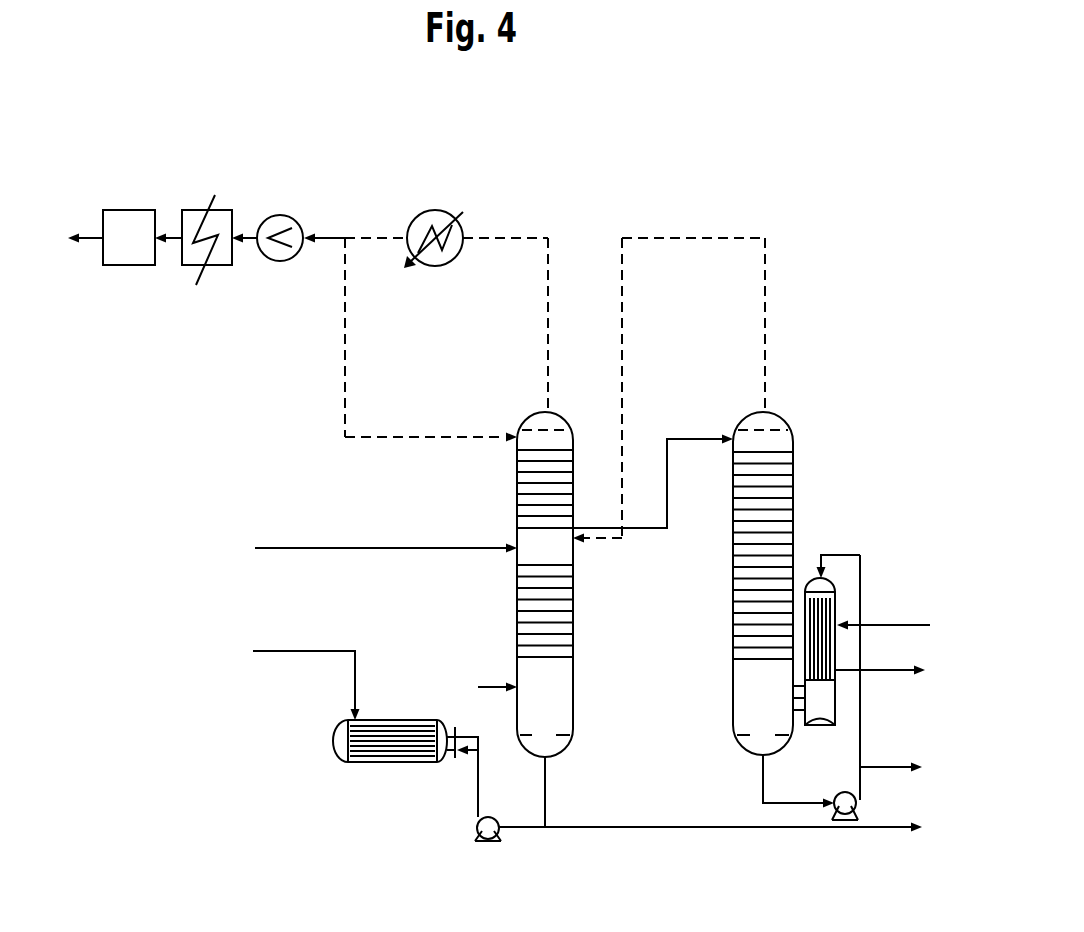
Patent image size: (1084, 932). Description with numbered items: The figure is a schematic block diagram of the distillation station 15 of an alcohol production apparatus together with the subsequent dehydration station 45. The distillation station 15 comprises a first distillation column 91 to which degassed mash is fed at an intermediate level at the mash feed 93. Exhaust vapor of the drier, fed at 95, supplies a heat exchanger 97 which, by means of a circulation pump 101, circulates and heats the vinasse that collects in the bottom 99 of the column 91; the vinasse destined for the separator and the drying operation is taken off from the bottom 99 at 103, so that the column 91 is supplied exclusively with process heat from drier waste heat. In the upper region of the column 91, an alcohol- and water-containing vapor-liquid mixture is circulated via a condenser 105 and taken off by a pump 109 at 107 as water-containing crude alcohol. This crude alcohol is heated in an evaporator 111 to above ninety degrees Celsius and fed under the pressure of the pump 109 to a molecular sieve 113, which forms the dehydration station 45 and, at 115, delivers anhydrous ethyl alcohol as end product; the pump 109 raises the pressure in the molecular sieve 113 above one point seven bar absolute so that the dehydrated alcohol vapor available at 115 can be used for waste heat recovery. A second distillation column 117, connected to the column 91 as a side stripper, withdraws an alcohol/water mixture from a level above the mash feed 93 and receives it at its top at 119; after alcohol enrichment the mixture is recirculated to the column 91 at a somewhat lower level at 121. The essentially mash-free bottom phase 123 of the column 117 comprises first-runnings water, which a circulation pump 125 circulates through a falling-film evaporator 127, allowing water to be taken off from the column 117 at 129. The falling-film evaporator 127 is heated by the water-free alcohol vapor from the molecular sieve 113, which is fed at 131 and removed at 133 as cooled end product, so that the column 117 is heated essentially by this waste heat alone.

The distillation station 15 is at (830, 308).
The dehydration station 45 is at (241, 172).
The first distillation column 91 is at (506, 602).
The mash feed 93 is at (432, 546).
The exhaust vapor feed 95 is at (287, 651).
The heat exchanger 97 is at (390, 765).
The bottom 99 is at (548, 723).
The circulation pump 101 is at (490, 843).
The vinasse take-off 103 is at (672, 829).
The condenser 105 is at (437, 210).
The crude alcohol take-off 107 is at (328, 232).
The pump 109 is at (280, 261).
The evaporator 111 is at (220, 267).
The molecular sieve 113 is at (127, 210).
The anhydrous alcohol outlet 115 is at (92, 240).
The second distillation column 117 is at (722, 615).
The alcohol/water mixture feed 119 is at (690, 437).
The recirculation point 121 is at (612, 540).
The bottom phase 123 is at (733, 732).
The circulation pump 125 is at (862, 808).
The falling-film evaporator 127 is at (838, 592).
The water take-off 129 is at (877, 766).
The alcohol vapor feed 131 is at (880, 624).
The cooled alcohol outlet 133 is at (878, 670).